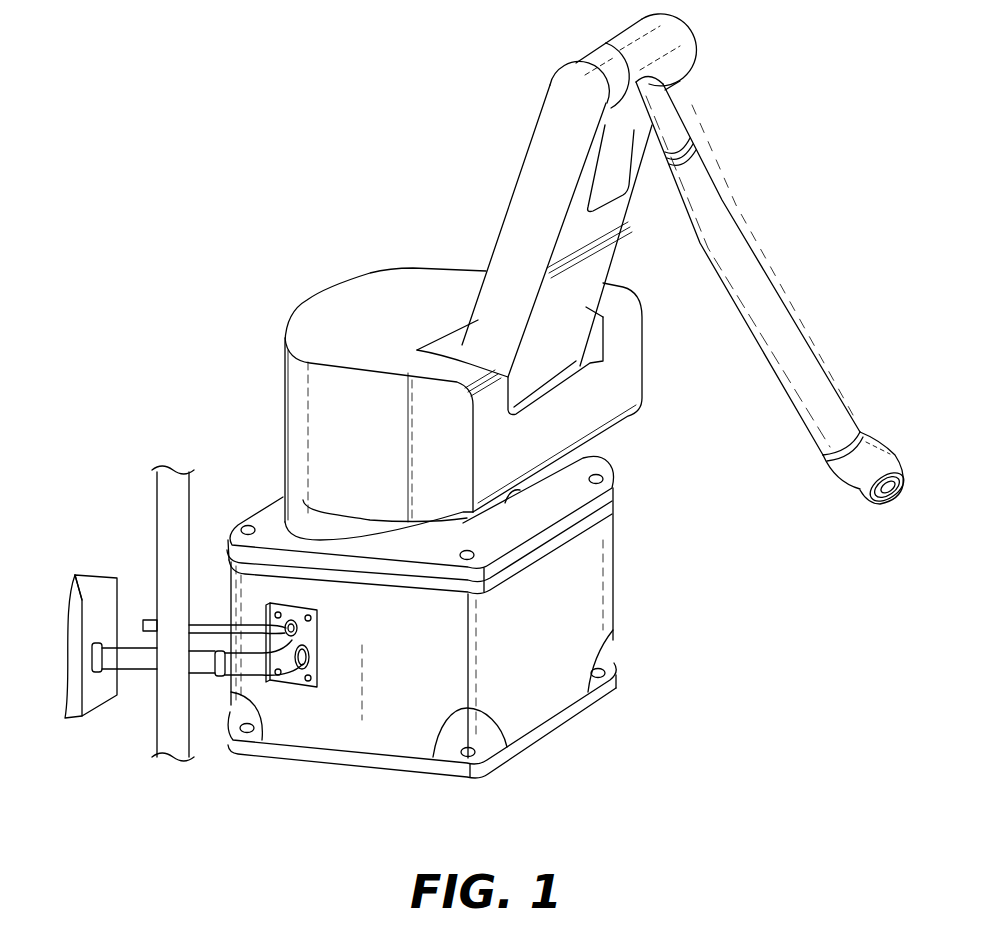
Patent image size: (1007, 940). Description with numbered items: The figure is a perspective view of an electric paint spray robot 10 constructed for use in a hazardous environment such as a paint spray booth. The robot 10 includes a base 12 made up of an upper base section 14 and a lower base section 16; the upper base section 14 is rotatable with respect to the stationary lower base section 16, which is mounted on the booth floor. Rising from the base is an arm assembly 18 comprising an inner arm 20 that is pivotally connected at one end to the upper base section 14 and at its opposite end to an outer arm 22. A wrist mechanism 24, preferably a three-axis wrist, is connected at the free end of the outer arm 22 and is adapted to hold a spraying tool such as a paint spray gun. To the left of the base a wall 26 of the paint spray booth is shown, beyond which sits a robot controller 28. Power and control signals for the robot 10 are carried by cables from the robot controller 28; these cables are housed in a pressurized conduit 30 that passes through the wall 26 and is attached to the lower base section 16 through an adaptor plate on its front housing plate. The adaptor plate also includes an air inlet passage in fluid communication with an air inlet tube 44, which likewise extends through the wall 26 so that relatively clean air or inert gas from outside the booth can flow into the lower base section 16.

The paint spray robot 10 is at (690, 121).
The base 12 is at (280, 370).
The upper base section 14 is at (643, 375).
The lower base section 16 is at (617, 535).
The arm assembly 18 is at (547, 63).
The inner arm 20 is at (513, 200).
The outer arm 22 is at (757, 248).
The wrist mechanism 24 is at (890, 452).
The wall 26 is at (157, 507).
The robot controller 28 is at (99, 575).
The pressurized conduit 30 is at (273, 672).
The air inlet tube 44 is at (232, 623).